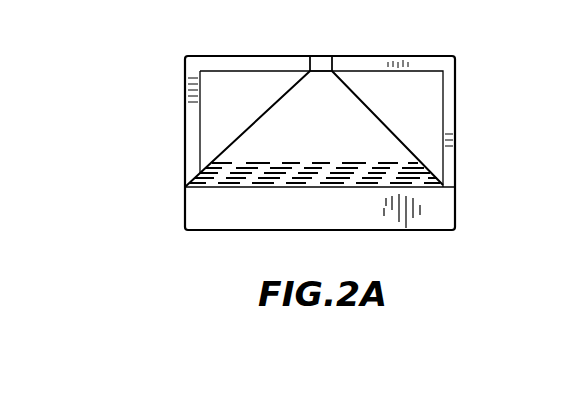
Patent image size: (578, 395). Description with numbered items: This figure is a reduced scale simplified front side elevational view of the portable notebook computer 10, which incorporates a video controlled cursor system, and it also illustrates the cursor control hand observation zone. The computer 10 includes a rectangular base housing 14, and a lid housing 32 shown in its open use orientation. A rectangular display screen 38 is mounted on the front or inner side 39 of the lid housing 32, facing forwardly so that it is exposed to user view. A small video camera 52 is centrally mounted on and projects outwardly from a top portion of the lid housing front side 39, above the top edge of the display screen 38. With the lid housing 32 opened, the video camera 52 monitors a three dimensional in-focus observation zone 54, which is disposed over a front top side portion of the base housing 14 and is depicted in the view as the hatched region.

The portable notebook computer 10 is at (152, 72).
The base housing 14 is at (457, 208).
The lid housing 32 is at (457, 78).
The display screen 38 is at (248, 108).
The front side of lid housing 39 is at (193, 124).
The video camera 52 is at (323, 56).
The observation zone 54 is at (335, 160).